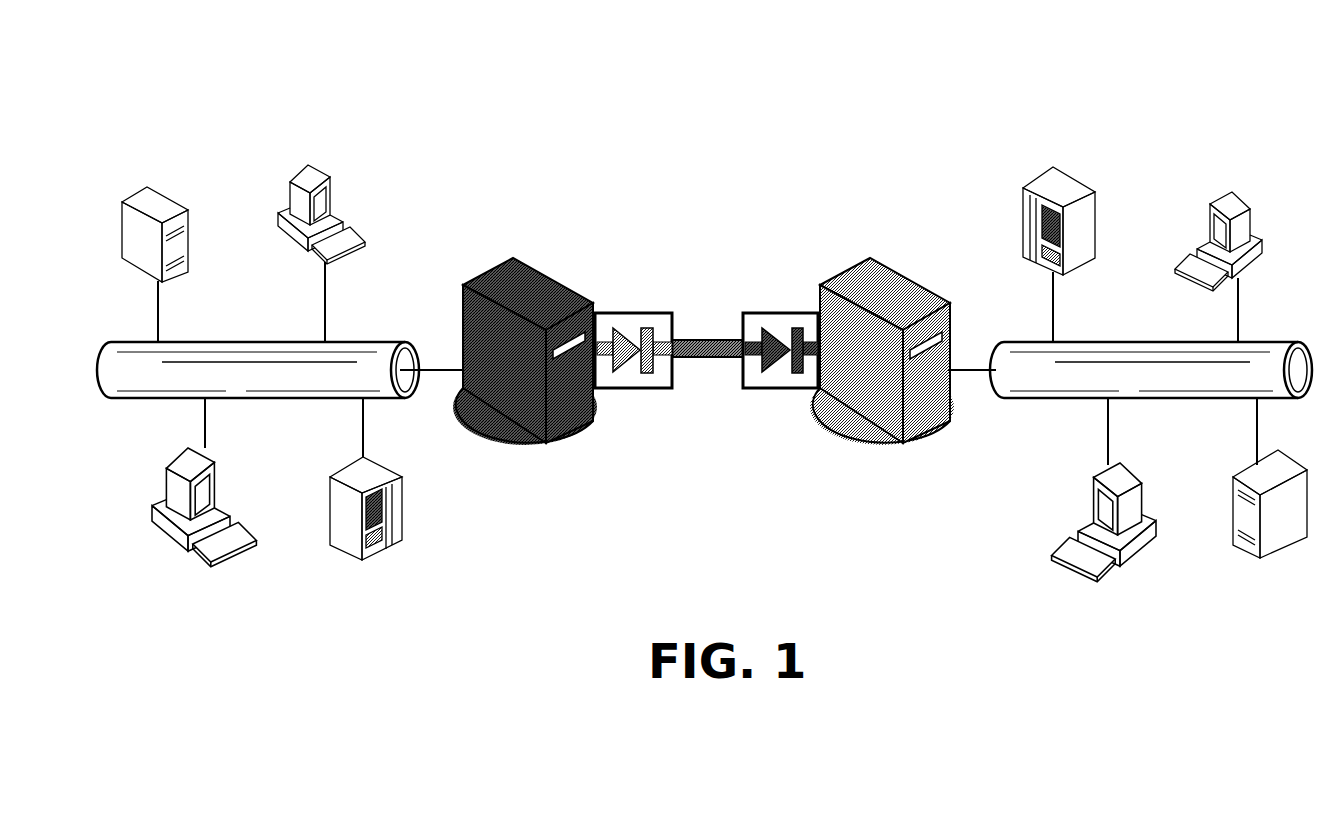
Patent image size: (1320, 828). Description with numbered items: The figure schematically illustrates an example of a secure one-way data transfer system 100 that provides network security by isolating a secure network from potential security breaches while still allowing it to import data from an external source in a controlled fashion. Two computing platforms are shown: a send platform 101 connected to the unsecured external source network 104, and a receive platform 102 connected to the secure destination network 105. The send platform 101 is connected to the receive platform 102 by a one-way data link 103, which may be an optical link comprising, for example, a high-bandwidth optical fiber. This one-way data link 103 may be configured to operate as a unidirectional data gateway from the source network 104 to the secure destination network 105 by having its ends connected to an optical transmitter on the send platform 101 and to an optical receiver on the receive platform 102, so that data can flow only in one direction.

The one-way data transfer system 100 is at (720, 103).
The send platform 101 is at (534, 270).
The receive platform 102 is at (863, 268).
The one-way data link 103 is at (708, 358).
The source network 104 is at (237, 367).
The destination network 105 is at (1117, 362).